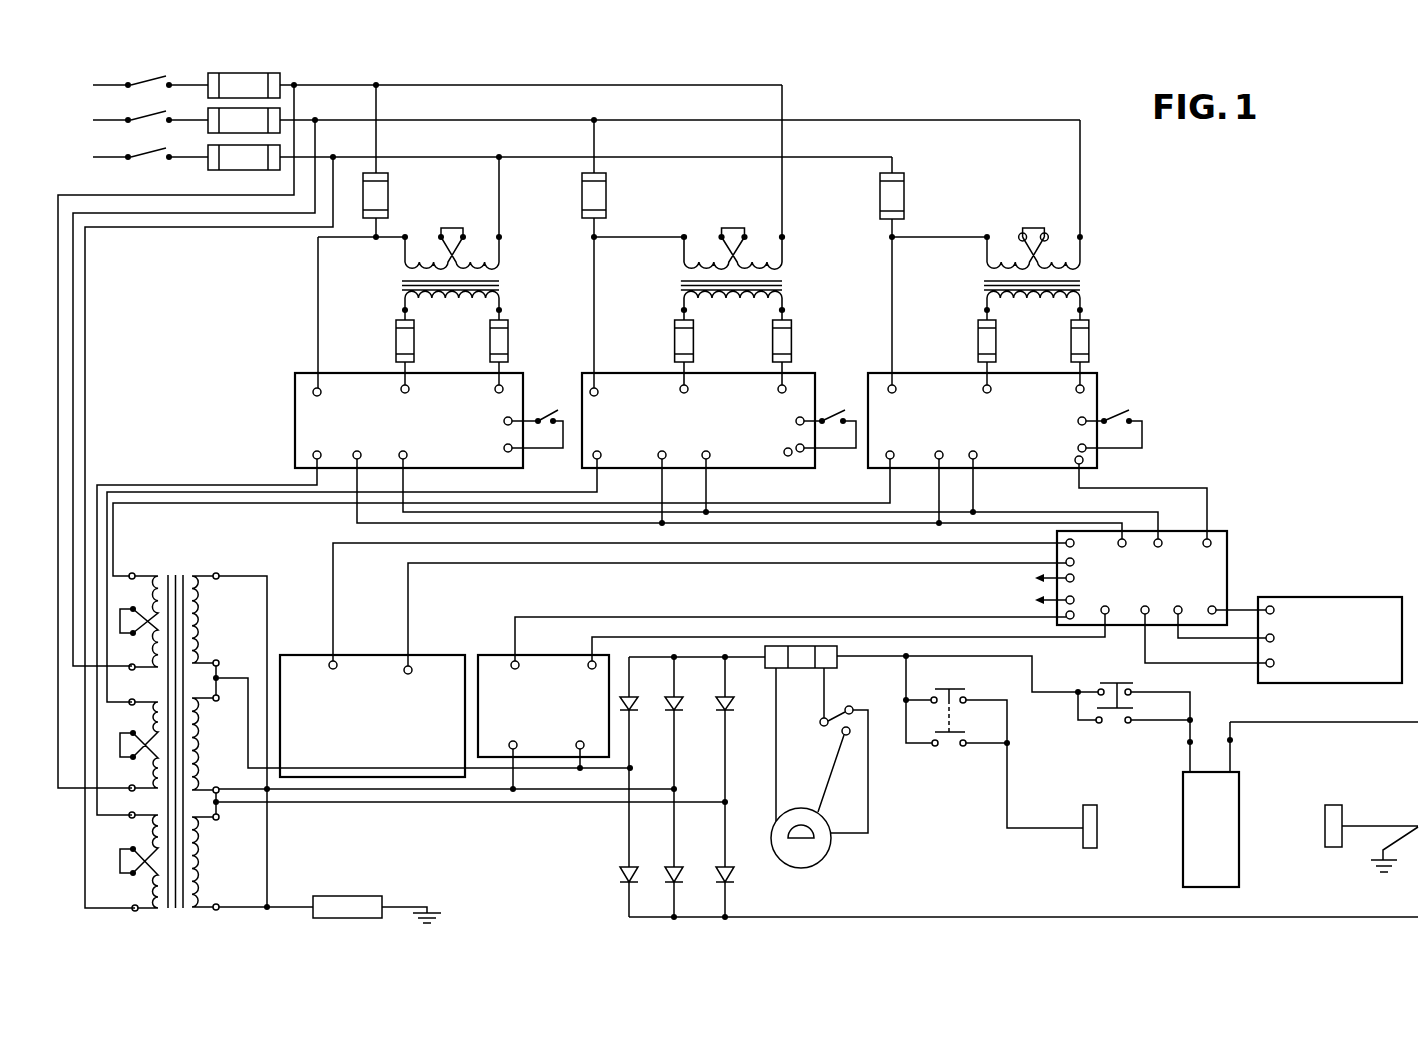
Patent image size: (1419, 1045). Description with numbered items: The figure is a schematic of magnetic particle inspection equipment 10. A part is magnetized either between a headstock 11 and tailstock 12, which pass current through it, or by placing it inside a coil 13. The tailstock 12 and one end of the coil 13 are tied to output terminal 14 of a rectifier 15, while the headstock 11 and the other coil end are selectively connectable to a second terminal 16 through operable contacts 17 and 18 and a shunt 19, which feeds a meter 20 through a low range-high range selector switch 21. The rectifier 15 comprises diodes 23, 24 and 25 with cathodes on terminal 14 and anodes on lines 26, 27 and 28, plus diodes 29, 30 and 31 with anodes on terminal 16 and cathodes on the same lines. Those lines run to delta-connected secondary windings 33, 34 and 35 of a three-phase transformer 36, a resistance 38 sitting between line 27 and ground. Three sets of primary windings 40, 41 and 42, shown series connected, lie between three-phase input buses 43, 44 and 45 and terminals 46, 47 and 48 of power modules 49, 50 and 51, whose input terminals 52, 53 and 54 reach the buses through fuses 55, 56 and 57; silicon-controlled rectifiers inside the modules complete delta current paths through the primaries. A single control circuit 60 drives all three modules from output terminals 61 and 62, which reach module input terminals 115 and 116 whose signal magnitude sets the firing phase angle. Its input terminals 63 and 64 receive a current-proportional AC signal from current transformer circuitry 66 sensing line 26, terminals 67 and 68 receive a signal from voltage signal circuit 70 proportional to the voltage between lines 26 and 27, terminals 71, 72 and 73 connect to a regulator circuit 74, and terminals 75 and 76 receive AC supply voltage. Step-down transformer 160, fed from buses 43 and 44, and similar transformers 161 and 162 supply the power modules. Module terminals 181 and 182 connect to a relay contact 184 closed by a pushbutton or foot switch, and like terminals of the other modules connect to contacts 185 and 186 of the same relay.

The inspection equipment 10 is at (738, 495).
The headstock 11 is at (1070, 834).
The tailstock 12 is at (1371, 827).
The coil 13 is at (1300, 804).
The output terminal 14 is at (1023, 929).
The rectifier 15 is at (767, 868).
The second terminal 16 is at (699, 750).
The contacts 17 is at (993, 742).
The contacts 18 is at (1135, 727).
The shunt 19 is at (931, 674).
The meter 20 is at (816, 771).
The low range-high range selector switch 21 is at (863, 750).
The diode 23 is at (606, 863).
The diode 24 is at (660, 862).
The diode 25 is at (708, 853).
The line 26 is at (426, 761).
The line 27 is at (448, 815).
The line 28 is at (473, 827).
The diode 29 is at (641, 689).
The diode 30 is at (687, 689).
The diode 31 is at (738, 693).
The secondary winding 33 is at (213, 754).
The secondary winding 34 is at (229, 740).
The secondary winding 35 is at (216, 862).
The three-phase transformer 36 is at (196, 716).
The resistance 38 is at (330, 882).
The primary winding 40 is at (134, 731).
The primary winding 41 is at (136, 599).
The primary winding 42 is at (125, 861).
The power input bus 43 is at (420, 417).
The power input bus 44 is at (576, 374).
The power input bus 45 is at (488, 518).
The terminal 46 is at (373, 580).
The terminal 47 is at (518, 517).
The terminal 48 is at (207, 618).
The power module 49 is at (675, 399).
The power module 50 is at (962, 399).
The power module 51 is at (383, 399).
The input terminal 52 is at (621, 312).
The input terminal 53 is at (920, 311).
The input terminal 54 is at (339, 312).
The fuse 55 is at (633, 180).
The fuse 56 is at (933, 198).
The fuse 57 is at (371, 162).
The control circuit 60 is at (1168, 544).
The output terminal 61 is at (800, 499).
The output terminal 62 is at (739, 499).
The input terminal 63 is at (737, 614).
The input terminal 64 is at (699, 571).
The current transformer circuitry 66 is at (372, 691).
The terminal 67 is at (796, 647).
The terminal 68 is at (853, 638).
The voltage signal circuit 70 is at (543, 705).
The terminal 71 is at (1243, 585).
The terminal 72 is at (1209, 637).
The terminal 73 is at (1191, 643).
The regulator circuit 74 is at (1330, 623).
The terminal 75 is at (1028, 586).
The terminal 76 is at (1009, 601).
The input terminal 115 is at (727, 485).
The input terminal 116 is at (683, 491).
The step-down transformer 160 is at (770, 306).
The transformer 161 is at (1076, 306).
The transformer 162 is at (480, 306).
The terminal 181 is at (805, 478).
The terminal 182 is at (827, 410).
The relay contact 184 is at (856, 473).
The contact 185 is at (1125, 416).
The contact 186 is at (541, 409).